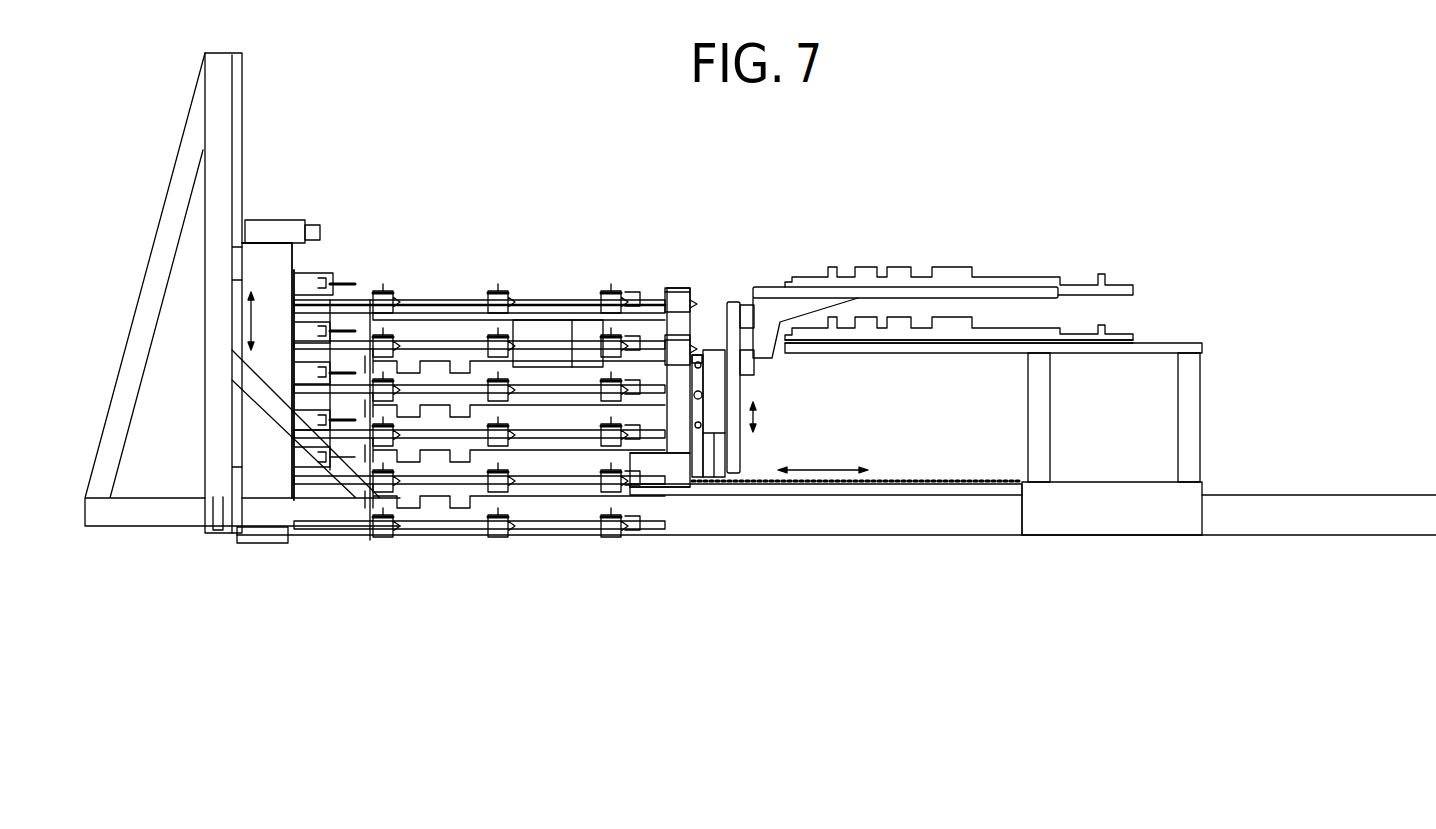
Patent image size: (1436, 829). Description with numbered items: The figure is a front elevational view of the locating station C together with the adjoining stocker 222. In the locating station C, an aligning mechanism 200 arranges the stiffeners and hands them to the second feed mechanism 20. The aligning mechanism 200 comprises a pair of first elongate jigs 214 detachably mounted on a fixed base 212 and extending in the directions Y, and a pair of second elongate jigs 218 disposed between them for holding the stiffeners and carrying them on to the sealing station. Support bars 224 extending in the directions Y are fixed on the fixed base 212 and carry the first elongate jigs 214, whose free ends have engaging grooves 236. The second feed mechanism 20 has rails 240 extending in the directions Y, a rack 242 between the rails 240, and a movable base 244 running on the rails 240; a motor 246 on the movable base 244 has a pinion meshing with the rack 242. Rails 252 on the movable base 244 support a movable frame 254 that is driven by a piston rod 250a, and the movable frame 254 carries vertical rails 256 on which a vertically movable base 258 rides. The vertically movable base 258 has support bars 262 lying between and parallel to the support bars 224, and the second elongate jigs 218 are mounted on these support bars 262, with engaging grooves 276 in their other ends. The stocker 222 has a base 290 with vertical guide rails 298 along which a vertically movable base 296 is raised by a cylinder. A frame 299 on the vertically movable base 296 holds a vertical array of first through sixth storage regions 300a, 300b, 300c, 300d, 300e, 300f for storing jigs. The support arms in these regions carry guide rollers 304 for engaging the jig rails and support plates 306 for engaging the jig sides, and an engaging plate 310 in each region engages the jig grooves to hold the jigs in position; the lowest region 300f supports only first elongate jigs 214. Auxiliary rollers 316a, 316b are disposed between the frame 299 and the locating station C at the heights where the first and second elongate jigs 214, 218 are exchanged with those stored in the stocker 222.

The second feed mechanism 20 is at (737, 302).
The aligning mechanism 200 is at (1125, 537).
The fixed base 212 is at (1068, 520).
The first elongate jigs 214 is at (486, 320).
The second elongate jigs 218 is at (948, 268).
The stocker 222 is at (405, 203).
The support bars 224 is at (1180, 344).
The engaging grooves 236 is at (797, 342).
The rails 240 is at (910, 487).
The rack 242 is at (957, 479).
The movable base 244 is at (680, 463).
The motor 246 is at (613, 295).
The piston rod 250a is at (708, 395).
The rails 252 is at (707, 487).
The movable frame 254 is at (718, 490).
The vertical rails 256 is at (744, 467).
The vertically movable base 258 is at (748, 303).
The support bars 262 is at (998, 289).
The engaging grooves 276 is at (770, 297).
The base 290 is at (158, 286).
The vertically movable base 296 is at (265, 240).
The guide rails 298 is at (236, 112).
The frame 299 is at (438, 314).
The first storage region 300a is at (519, 300).
The second storage region 300b is at (520, 336).
The third storage region 300c is at (425, 390).
The fourth storage region 300d is at (518, 440).
The fifth storage region 300e is at (415, 467).
The sixth storage region 300f is at (488, 522).
The guide rollers 304 is at (398, 292).
The support plates 306 is at (383, 290).
The engaging plate 310 is at (325, 273).
The auxiliary roller 316a is at (684, 289).
The auxiliary roller 316b is at (688, 338).
The locating station C is at (1148, 273).
The directions Y is at (1015, 557).